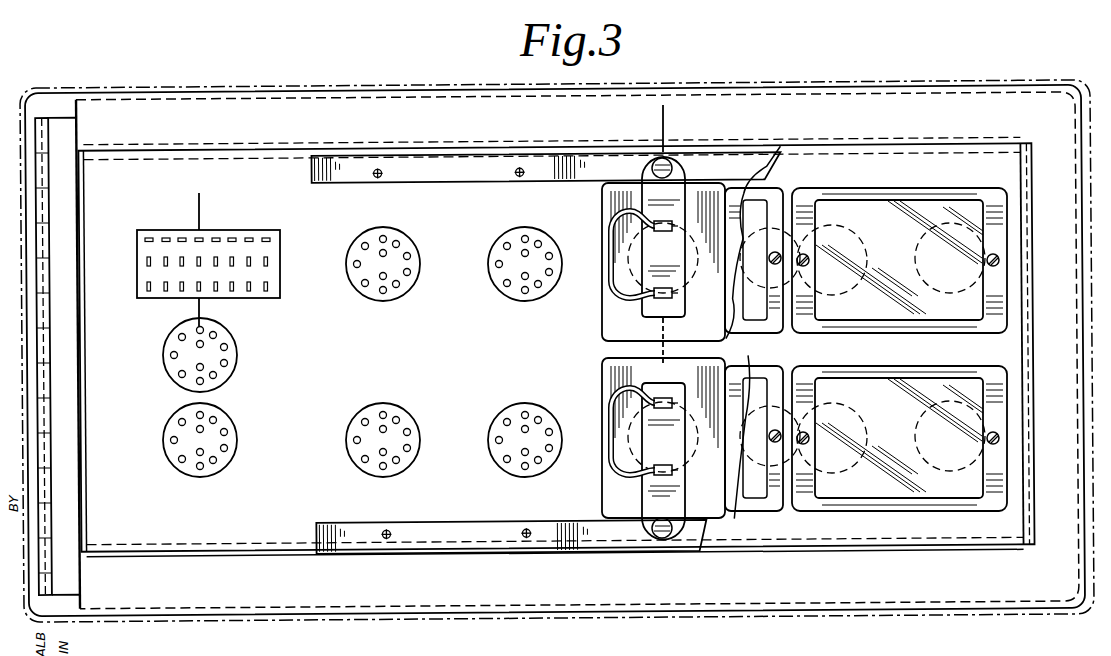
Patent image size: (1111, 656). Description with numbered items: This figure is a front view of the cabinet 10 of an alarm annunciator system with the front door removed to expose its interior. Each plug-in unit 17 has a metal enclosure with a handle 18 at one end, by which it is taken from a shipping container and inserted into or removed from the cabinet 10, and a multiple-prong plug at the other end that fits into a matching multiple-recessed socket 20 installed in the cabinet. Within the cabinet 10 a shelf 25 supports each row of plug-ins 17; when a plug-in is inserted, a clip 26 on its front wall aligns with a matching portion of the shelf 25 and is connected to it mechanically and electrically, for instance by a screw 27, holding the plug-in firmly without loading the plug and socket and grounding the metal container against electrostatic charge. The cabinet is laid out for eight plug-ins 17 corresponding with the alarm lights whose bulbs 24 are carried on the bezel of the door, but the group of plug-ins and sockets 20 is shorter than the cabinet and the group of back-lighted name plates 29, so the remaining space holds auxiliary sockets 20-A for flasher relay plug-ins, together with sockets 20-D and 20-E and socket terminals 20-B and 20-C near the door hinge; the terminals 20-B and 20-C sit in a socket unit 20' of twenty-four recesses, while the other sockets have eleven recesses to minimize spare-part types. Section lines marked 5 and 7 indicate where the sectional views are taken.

The cabinet 10 is at (1023, 67).
The plug-in unit 17 is at (602, 332).
The handle 18 is at (645, 236).
The multiple-recessed socket 20 is at (524, 352).
The socket for flasher relay plug-ins 20-A is at (146, 240).
The socket terminal 20-B is at (147, 262).
The socket terminal 20-C is at (147, 288).
The socket 20-D is at (233, 343).
The socket 20-E is at (233, 426).
The socket unit 20' is at (228, 256).
The bulb 24 is at (1003, 295).
The shelf 25 is at (458, 181).
The clip 26 is at (645, 192).
The screw 27 is at (672, 162).
The back-lighted name plate 29 is at (986, 206).
The section line 5- 5 is at (681, 122).
The section line 7- 7 is at (212, 205).